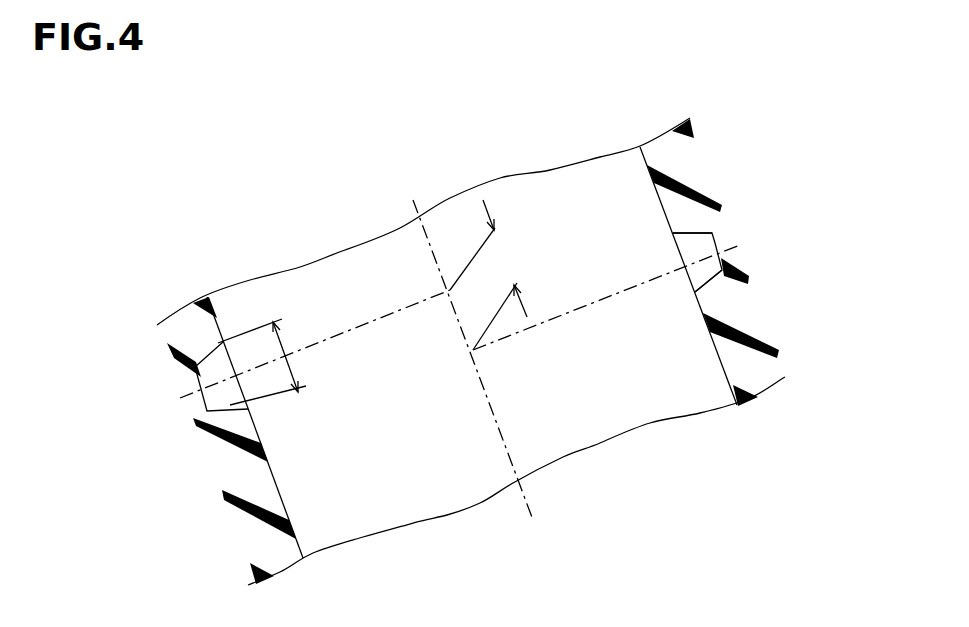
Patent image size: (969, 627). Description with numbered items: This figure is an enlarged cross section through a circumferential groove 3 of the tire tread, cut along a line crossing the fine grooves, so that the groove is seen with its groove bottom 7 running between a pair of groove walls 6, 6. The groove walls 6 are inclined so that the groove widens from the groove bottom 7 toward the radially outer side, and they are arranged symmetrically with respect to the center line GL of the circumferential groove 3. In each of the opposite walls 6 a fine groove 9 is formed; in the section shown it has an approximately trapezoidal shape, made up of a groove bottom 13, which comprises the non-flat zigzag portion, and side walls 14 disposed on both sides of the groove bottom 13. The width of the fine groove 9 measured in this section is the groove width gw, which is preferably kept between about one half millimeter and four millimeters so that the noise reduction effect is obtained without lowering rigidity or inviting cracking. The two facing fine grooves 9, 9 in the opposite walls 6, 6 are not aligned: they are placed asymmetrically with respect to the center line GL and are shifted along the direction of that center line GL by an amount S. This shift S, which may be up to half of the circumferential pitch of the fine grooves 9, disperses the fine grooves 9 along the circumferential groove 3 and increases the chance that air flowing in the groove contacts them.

The circumferential groove 3 is at (440, 457).
The groove wall 6 is at (199, 380).
The groove bottom 7 is at (397, 268).
The fine groove 9 is at (224, 397).
The groove bottom 13 is at (203, 362).
The side wall 14 is at (690, 235).
The groove width gw is at (271, 362).
The amount of shift S is at (488, 275).
The center line of the groove GL is at (520, 490).